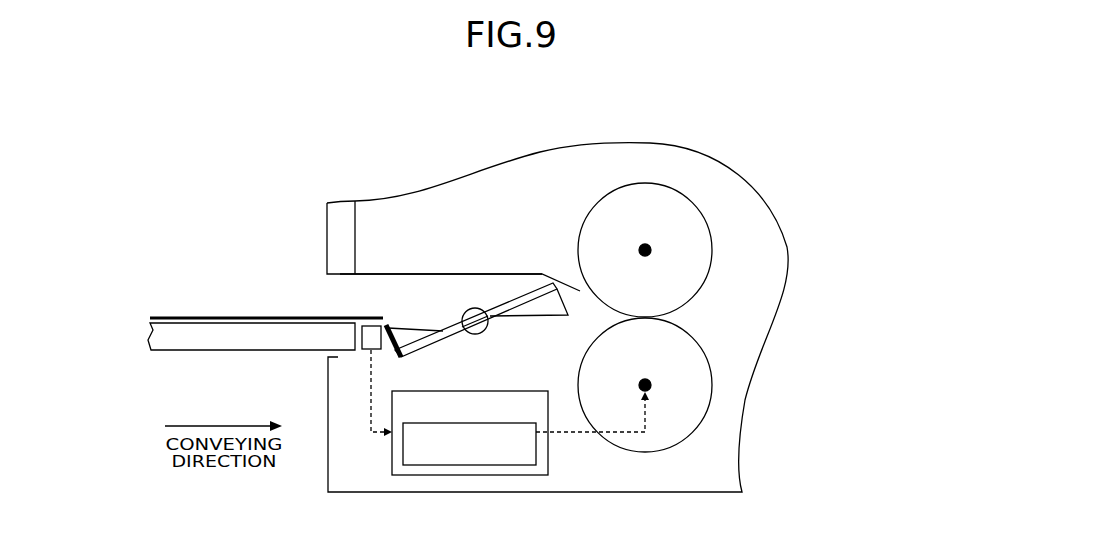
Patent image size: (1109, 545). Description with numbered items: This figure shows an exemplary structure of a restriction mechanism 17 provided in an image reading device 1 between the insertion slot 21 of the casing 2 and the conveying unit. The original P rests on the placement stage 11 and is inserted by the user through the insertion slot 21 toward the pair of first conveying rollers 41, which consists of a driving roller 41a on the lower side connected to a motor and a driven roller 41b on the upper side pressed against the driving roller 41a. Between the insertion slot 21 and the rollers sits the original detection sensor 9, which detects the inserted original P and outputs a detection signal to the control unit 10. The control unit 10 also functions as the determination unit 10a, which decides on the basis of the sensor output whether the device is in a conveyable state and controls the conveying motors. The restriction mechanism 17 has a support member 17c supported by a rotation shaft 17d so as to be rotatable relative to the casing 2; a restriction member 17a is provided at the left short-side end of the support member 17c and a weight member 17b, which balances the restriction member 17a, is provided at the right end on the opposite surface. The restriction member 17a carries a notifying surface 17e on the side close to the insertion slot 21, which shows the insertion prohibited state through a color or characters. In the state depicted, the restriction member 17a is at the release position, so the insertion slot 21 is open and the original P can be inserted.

The image reading device 1 is at (191, 145).
The casing 2 is at (323, 227).
The insertion slot 21 is at (362, 283).
The original P is at (205, 318).
The placement stage 11 is at (237, 338).
The original detection sensor 9 is at (371, 340).
The restriction mechanism 17 is at (475, 335).
The restriction member 17a is at (408, 332).
The weight member 17b is at (547, 308).
The support member 17c is at (498, 318).
The rotation shaft 17d is at (481, 333).
The notifying surface 17e is at (393, 351).
The control unit 10 is at (496, 433).
The determination unit 10a is at (536, 447).
The first conveying rollers 41 is at (734, 317).
The driving roller 41a is at (711, 385).
The driven roller 41b is at (700, 248).